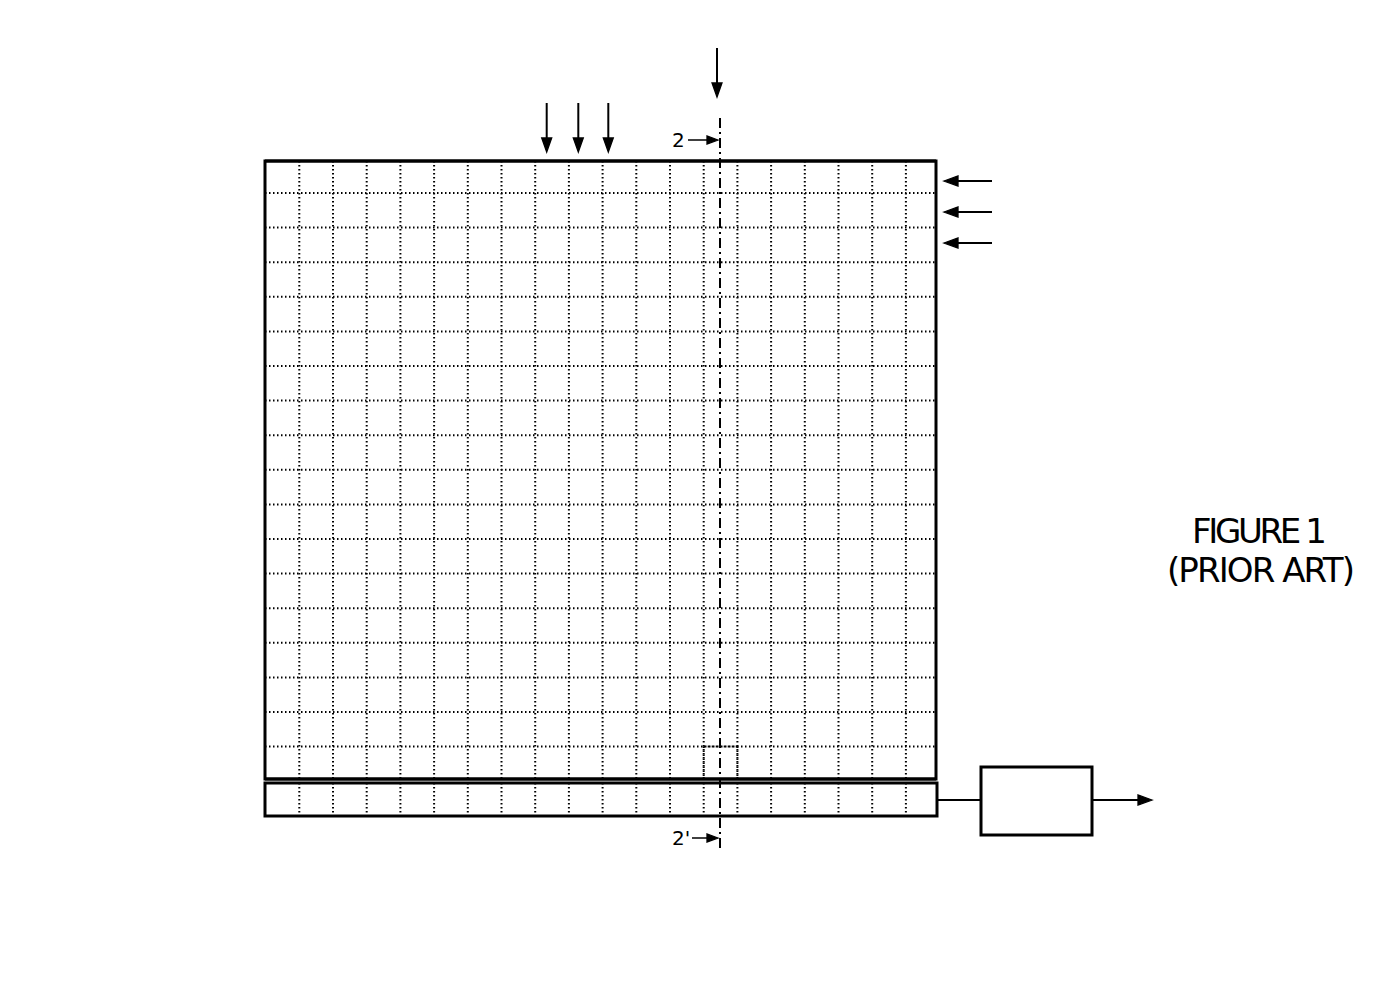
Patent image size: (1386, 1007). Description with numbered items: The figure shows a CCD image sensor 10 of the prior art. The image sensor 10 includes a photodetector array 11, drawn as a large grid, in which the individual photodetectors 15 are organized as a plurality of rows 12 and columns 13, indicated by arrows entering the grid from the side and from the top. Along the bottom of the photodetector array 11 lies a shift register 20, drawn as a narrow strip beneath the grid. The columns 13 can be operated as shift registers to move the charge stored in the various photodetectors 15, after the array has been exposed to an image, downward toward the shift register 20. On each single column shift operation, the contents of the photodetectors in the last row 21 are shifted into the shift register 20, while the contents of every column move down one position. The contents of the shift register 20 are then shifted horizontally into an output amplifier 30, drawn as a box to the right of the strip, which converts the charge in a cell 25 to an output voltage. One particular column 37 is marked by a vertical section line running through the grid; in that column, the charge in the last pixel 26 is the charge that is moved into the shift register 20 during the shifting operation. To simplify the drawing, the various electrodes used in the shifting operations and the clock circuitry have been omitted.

The image sensor 10 is at (168, 186).
The photodetector array 11 is at (440, 160).
The rows 12 is at (993, 212).
The columns 13 is at (578, 105).
The photodetector 15 is at (822, 187).
The shift register 20 is at (522, 803).
The row 21 is at (238, 764).
The cell 25 is at (710, 693).
The pixel 26 is at (710, 765).
The output amplifier 30 is at (1046, 778).
The column 37 is at (718, 56).